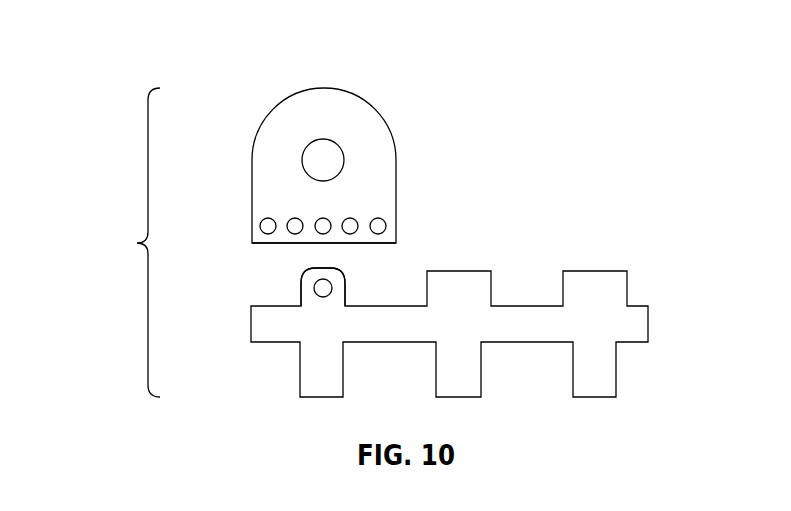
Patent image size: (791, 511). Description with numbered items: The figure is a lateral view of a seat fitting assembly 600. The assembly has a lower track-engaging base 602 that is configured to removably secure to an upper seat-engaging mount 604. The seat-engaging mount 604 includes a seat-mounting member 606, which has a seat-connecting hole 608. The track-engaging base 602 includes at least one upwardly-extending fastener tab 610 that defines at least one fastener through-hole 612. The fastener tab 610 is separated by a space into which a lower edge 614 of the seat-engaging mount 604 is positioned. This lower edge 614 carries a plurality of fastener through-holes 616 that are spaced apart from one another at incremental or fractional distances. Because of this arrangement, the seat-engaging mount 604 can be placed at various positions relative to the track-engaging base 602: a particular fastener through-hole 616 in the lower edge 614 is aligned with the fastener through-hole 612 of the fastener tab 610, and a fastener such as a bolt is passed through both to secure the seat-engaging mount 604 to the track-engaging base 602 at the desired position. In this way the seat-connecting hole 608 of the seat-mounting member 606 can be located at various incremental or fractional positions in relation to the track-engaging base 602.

The seat fitting assembly 600 is at (122, 242).
The lower track-engaging base 602 is at (633, 343).
The upper seat-engaging mount 604 is at (270, 71).
The seat-mounting member 606 is at (252, 160).
The seat-connecting hole 608 is at (323, 160).
The fastener tab 610 is at (345, 285).
The fastener through-hole 612 is at (317, 287).
The lower edge 614 is at (396, 243).
The fastener through-holes 616 is at (292, 222).